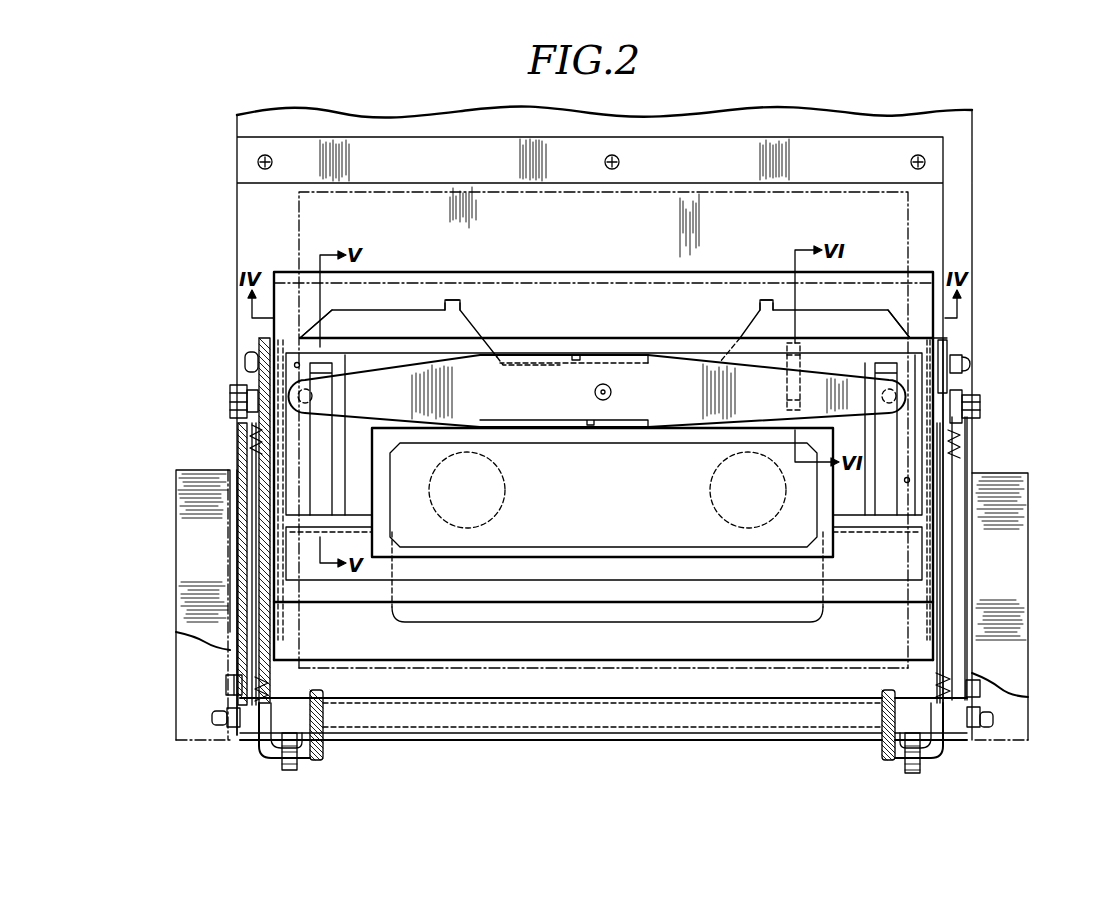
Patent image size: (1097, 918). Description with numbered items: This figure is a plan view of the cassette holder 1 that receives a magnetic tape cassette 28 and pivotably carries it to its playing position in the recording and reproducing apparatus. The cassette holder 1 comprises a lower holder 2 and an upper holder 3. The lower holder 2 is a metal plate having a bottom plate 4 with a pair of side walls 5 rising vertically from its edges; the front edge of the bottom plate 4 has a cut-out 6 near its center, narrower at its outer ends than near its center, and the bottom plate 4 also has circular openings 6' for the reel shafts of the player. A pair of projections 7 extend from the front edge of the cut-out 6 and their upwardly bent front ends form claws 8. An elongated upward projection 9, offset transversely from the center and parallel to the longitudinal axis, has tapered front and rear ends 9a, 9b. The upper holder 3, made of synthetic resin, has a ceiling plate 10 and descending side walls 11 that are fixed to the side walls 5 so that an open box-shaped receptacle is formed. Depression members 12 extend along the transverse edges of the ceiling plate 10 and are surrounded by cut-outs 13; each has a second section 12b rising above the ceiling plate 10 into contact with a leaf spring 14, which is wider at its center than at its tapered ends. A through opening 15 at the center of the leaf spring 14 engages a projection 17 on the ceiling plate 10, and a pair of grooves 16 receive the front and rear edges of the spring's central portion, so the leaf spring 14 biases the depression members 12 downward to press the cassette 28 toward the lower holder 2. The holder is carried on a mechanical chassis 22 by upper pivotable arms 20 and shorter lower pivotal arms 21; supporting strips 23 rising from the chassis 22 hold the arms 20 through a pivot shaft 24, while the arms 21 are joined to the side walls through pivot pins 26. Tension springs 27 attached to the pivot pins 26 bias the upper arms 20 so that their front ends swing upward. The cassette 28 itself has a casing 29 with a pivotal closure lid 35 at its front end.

The cassette holder 1 is at (938, 338).
The lower holder 2 is at (425, 317).
The upper holder 3 is at (947, 347).
The bottom plate 4 is at (858, 318).
The side walls 5 is at (237, 481).
The cut-out 6 is at (613, 320).
The circular openings 6' is at (607, 491).
The projections 7 is at (463, 309).
The claws 8 is at (452, 298).
The projection 9 is at (800, 392).
The tapered front end 9a is at (803, 348).
The tapered rear end 9b is at (787, 408).
The ceiling plate 10 is at (293, 340).
The side walls 11 is at (277, 457).
The depression members 12 is at (320, 455).
The second section 12b is at (312, 396).
The cut-outs 13 is at (295, 365).
The leaf spring 14 is at (682, 415).
The through opening 15 is at (595, 393).
The grooves 16 is at (578, 355).
The projection 17 is at (611, 392).
The upper pivotable arms 20 is at (267, 563).
The lower pivotal arms 21 is at (238, 510).
The mechanical chassis 22 is at (943, 118).
The supporting strips 23 is at (176, 590).
The pivot shaft 24 is at (428, 723).
The pivot pins 26 is at (232, 397).
The tension springs 27 is at (257, 433).
The magnetic tape cassette 28 is at (592, 650).
The casing 29 is at (783, 668).
The pivotal closure lid 35 is at (650, 203).